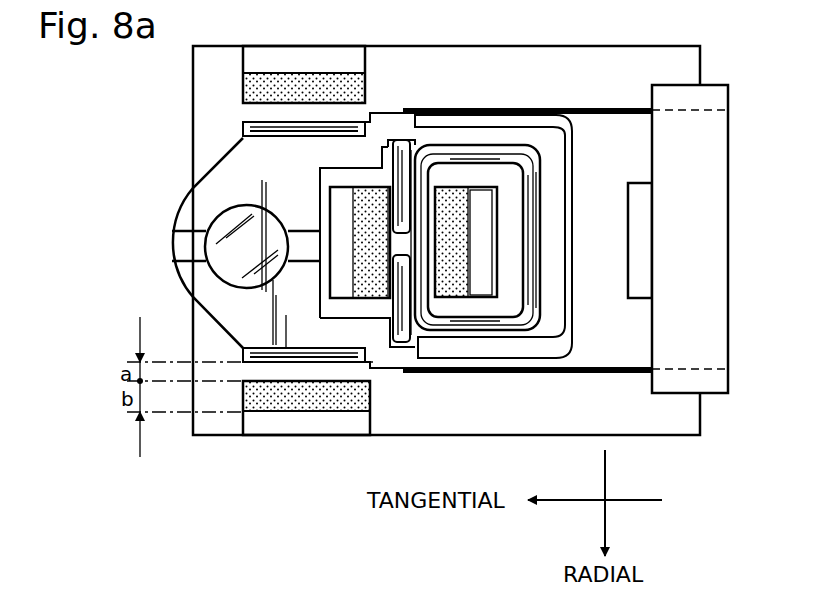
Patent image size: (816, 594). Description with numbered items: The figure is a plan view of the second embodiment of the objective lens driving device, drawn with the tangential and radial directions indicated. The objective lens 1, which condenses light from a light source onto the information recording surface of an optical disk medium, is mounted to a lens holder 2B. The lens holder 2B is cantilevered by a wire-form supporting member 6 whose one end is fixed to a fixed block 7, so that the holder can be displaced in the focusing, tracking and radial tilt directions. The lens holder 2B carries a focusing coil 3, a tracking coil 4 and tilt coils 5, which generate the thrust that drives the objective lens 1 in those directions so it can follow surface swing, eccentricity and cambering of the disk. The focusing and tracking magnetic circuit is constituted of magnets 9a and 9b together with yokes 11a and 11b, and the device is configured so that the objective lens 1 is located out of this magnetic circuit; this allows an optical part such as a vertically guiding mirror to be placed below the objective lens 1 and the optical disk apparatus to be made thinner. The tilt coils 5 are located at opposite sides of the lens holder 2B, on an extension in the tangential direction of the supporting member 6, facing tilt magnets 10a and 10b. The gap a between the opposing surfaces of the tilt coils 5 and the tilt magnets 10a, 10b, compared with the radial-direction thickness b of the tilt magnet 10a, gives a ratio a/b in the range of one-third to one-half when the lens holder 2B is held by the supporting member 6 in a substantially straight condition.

The objective lens 1 is at (217, 242).
The lens holder 2B is at (230, 173).
The focusing coil 3 is at (518, 325).
The tracking coil 4 is at (400, 145).
The tilt coil 5 is at (337, 380).
The supporting member 6 is at (605, 108).
The fixed block 7 is at (712, 182).
The magnet 9a is at (368, 197).
The magnet 9b is at (452, 200).
The tilt magnet 10a is at (280, 400).
The tilt magnet 10b is at (282, 82).
The yoke 11a is at (337, 200).
The yoke 11b is at (485, 238).